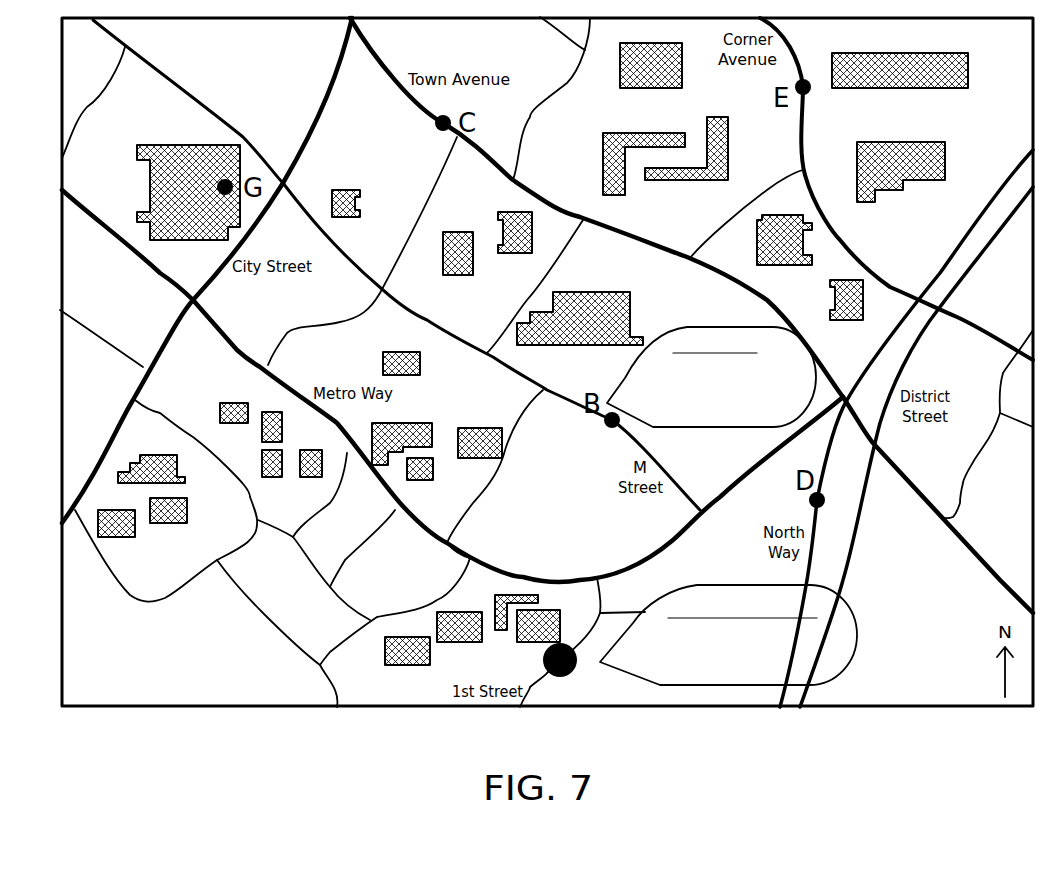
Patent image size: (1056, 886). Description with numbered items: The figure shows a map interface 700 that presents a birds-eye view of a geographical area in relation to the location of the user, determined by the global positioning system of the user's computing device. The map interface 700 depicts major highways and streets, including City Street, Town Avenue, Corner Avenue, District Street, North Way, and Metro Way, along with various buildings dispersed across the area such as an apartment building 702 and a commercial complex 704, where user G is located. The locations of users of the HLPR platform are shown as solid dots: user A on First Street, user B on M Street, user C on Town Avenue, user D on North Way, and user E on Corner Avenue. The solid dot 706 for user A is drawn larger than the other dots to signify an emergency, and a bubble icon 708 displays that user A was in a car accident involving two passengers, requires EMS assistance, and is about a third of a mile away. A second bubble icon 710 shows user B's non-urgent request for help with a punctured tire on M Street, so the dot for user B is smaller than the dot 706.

The map interface 700 is at (555, 756).
The apartment building 702 is at (420, 422).
The commercial complex 704 is at (150, 183).
The solid dot 706 is at (580, 673).
The bubble icon 708 is at (857, 630).
The bubble icon 710 is at (813, 353).